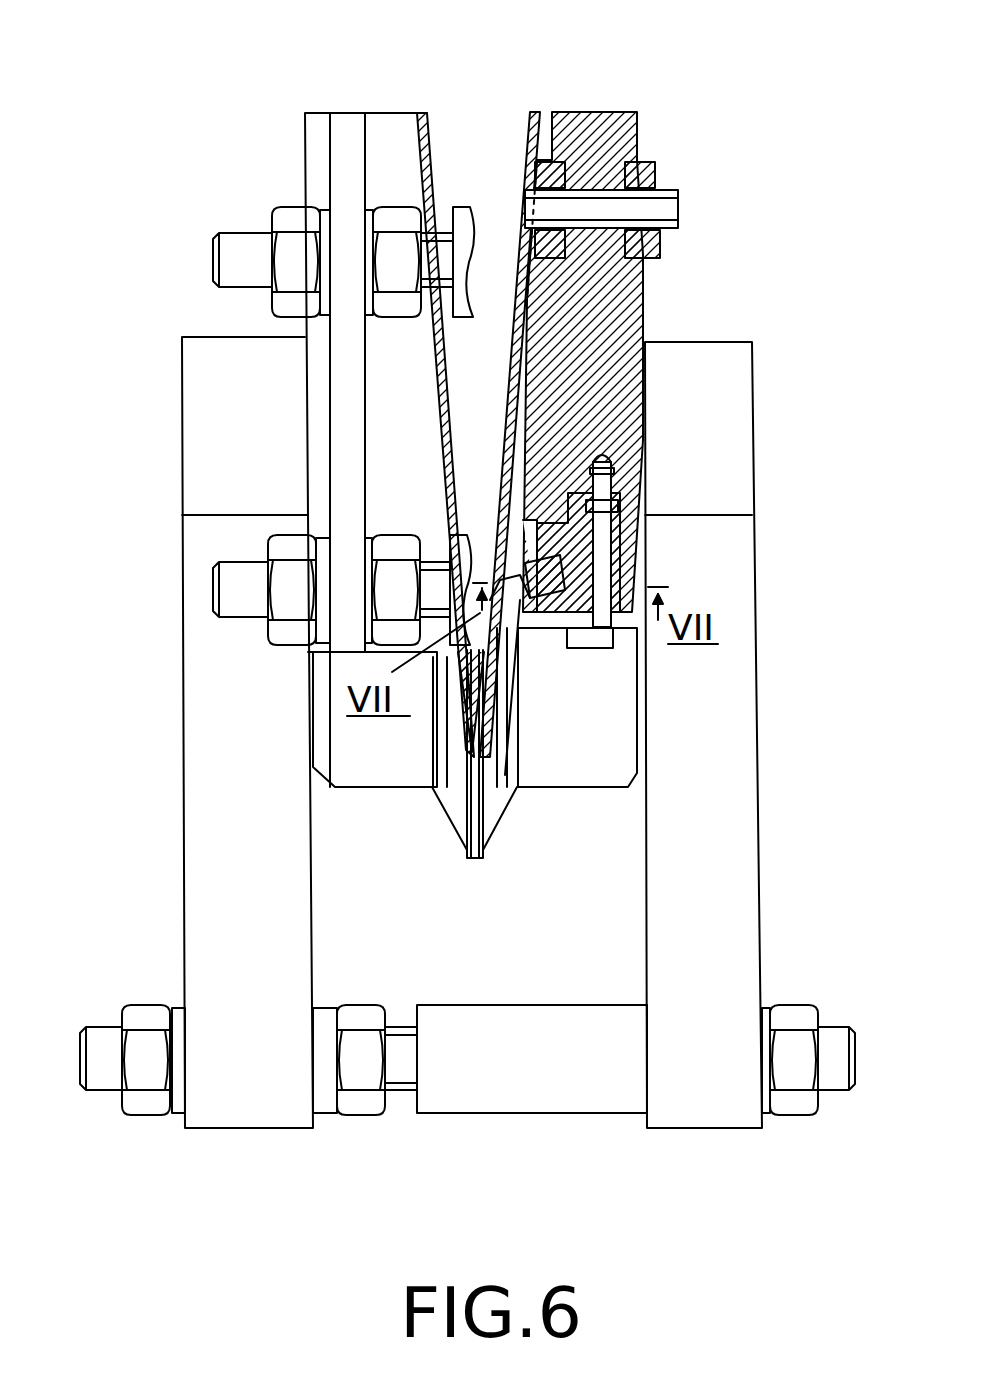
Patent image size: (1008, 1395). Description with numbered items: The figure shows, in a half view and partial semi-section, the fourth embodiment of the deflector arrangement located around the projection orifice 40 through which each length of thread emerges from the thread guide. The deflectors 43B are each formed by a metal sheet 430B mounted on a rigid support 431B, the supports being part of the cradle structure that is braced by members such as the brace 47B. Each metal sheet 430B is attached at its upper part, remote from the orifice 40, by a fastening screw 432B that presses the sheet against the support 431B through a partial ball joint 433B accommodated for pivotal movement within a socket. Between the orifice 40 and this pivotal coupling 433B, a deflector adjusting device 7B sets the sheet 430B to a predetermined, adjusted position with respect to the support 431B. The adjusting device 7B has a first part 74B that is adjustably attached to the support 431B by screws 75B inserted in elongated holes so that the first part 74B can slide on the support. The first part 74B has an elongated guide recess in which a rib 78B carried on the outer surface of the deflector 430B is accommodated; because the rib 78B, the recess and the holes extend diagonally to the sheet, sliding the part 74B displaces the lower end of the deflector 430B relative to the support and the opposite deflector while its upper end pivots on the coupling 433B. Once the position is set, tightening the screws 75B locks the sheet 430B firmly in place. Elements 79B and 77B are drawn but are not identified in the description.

The deflector adjusting device 7B is at (737, 725).
The brace 47B is at (585, 1093).
The rigid support 431B is at (390, 465).
The metal sheet 430B is at (420, 158).
The deflector 43B is at (528, 98).
The fastening screw 432B is at (618, 205).
The partial ball joint 433B is at (546, 257).
The first part 74B is at (612, 550).
The screw 79B is at (607, 457).
The support block 77B is at (628, 640).
The screw 75B is at (598, 648).
The rib 78B is at (517, 597).
The projection orifice 40 is at (458, 829).